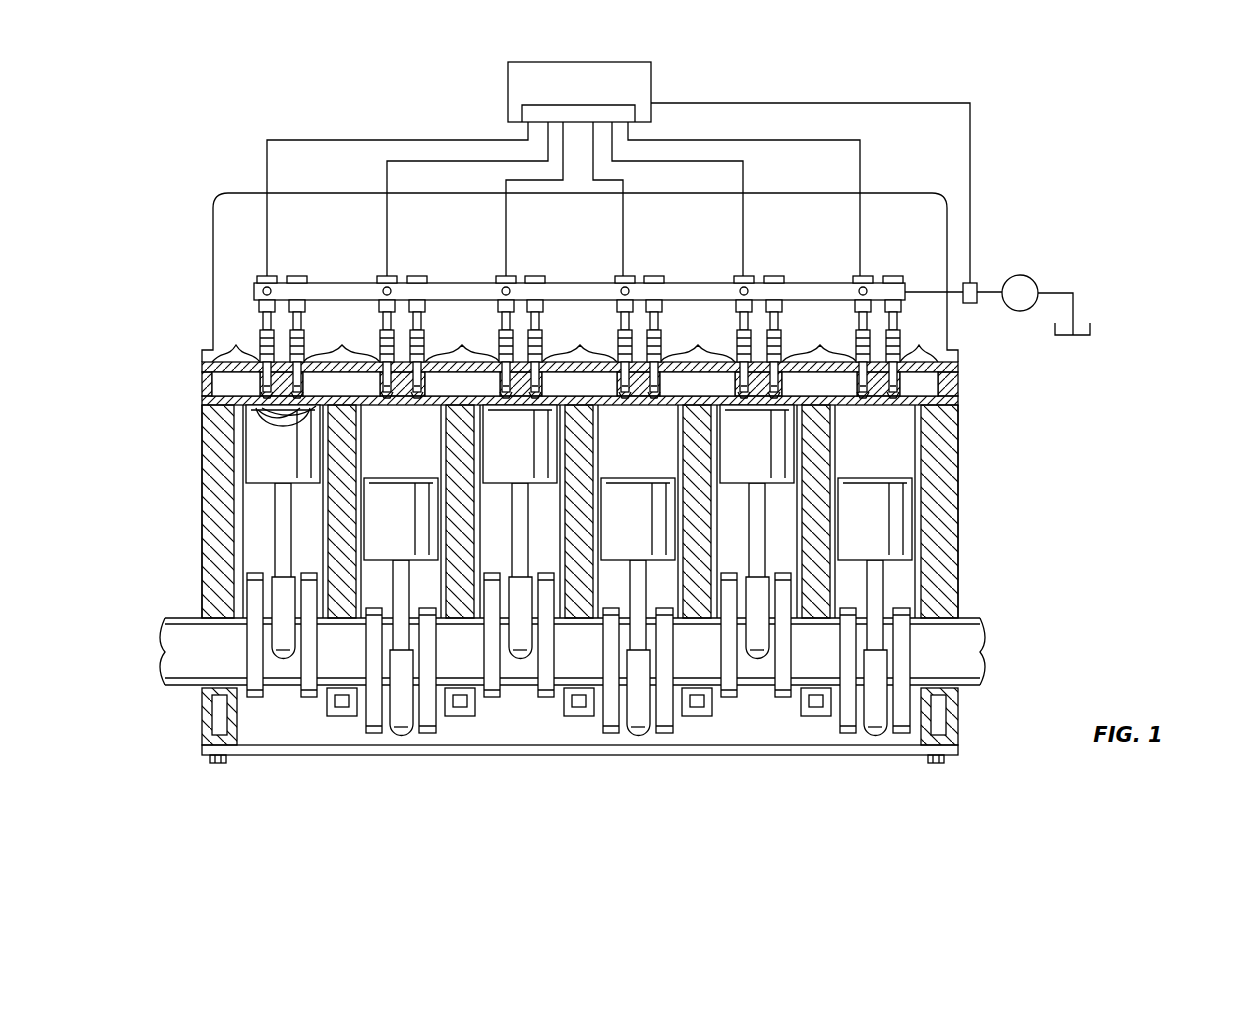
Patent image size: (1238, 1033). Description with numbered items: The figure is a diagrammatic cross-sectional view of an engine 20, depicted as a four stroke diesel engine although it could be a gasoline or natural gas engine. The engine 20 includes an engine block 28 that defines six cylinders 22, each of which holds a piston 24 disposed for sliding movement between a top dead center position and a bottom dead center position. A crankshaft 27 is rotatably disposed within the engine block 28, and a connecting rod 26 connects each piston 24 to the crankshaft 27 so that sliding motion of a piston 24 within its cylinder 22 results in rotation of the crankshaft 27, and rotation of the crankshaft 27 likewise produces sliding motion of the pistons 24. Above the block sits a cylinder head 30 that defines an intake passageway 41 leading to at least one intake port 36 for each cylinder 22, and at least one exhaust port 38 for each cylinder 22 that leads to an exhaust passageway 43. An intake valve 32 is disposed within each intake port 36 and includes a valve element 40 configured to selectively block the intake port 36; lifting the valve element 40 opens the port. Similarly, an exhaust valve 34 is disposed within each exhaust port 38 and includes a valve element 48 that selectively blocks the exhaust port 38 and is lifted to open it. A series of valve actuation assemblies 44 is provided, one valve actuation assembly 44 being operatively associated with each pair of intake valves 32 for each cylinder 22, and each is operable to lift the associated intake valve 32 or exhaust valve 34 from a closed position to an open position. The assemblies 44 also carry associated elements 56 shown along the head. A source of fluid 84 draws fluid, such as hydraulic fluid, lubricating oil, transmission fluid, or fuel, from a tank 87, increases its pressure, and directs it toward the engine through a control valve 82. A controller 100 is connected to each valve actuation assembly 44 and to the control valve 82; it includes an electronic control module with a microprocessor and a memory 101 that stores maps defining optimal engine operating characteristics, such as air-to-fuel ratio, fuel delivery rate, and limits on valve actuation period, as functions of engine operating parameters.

The engine 20 is at (1015, 174).
The cylinder 22 is at (291, 534).
The piston 24 is at (270, 472).
The connecting rod 26 is at (278, 548).
The crankshaft 27 is at (183, 656).
The engine block 28 is at (210, 418).
The cylinder head 30 is at (960, 384).
The intake valve 32 is at (580, 341).
The exhaust valve 34 is at (576, 341).
The intake port 36 is at (283, 438).
The exhaust port 38 is at (292, 410).
The valve element 40 is at (312, 404).
The intake passageway 41 is at (330, 394).
The exhaust passageway 43 is at (450, 394).
The valve actuation assembly 44 is at (283, 276).
The valve element 48 is at (222, 378).
The injector nozzle 56 is at (262, 318).
The control valve 82 is at (972, 305).
The source of fluid 84 is at (1020, 277).
The tank 87 is at (1092, 326).
The controller 100 is at (562, 96).
The memory 101 is at (623, 110).